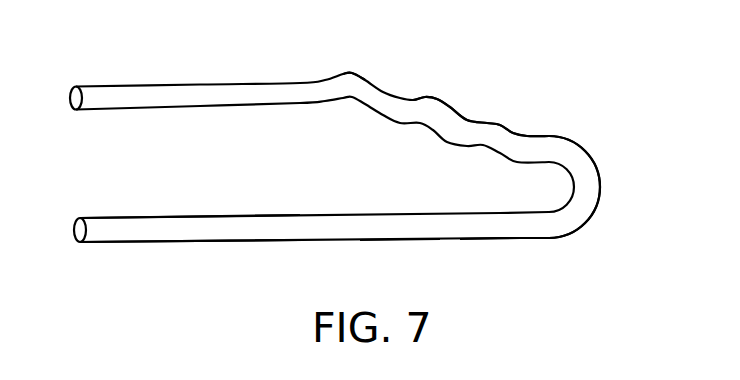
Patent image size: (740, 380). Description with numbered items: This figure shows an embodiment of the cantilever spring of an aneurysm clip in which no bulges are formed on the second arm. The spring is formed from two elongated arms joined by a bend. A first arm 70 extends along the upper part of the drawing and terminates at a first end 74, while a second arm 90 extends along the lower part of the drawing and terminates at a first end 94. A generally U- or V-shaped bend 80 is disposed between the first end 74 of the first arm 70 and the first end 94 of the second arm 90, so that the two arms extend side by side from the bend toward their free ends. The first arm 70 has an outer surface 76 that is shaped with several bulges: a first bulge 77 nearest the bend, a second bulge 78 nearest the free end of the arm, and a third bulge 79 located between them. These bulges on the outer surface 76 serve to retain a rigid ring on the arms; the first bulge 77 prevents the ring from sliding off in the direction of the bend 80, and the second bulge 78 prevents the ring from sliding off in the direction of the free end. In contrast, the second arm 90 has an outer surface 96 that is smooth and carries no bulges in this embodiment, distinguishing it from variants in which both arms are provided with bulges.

The first arm 70 is at (175, 93).
The second bulge 78 is at (360, 83).
The third bulge 79 is at (430, 108).
The outer surface 76 is at (447, 103).
The first bulge 77 is at (491, 130).
The first end 74 is at (516, 148).
The bend 80 is at (568, 145).
The second arm 90 is at (237, 232).
The outer surface 96 is at (398, 240).
The first end 94 is at (495, 231).